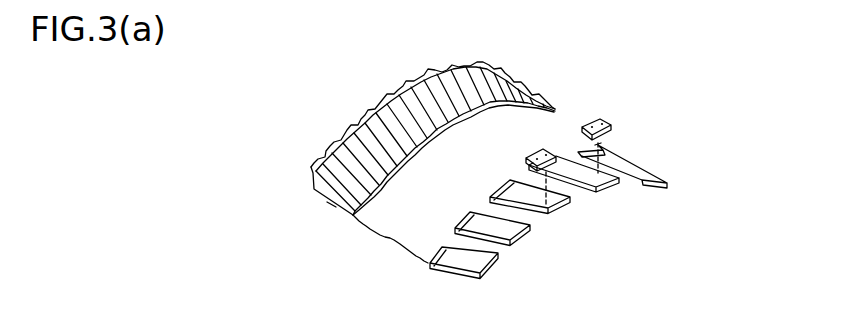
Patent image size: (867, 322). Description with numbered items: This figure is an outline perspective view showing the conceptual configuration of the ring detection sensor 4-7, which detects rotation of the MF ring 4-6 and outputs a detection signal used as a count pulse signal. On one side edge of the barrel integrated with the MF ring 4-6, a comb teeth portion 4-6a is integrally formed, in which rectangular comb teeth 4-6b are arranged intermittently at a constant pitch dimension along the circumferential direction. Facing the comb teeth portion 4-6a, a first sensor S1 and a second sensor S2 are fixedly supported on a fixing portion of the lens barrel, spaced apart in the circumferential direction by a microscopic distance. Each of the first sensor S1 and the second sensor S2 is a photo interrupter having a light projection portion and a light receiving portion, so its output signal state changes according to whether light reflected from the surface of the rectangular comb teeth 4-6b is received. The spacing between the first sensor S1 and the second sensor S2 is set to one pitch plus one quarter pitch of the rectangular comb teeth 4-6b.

The MF ring 4-6 is at (497, 82).
The comb teeth portion 4-6a is at (575, 211).
The rectangular comb teeth 4-6b is at (614, 185).
The ring detection sensor 4-7 is at (582, 37).
The first sensor S1 is at (607, 117).
The second sensor S2 is at (543, 149).